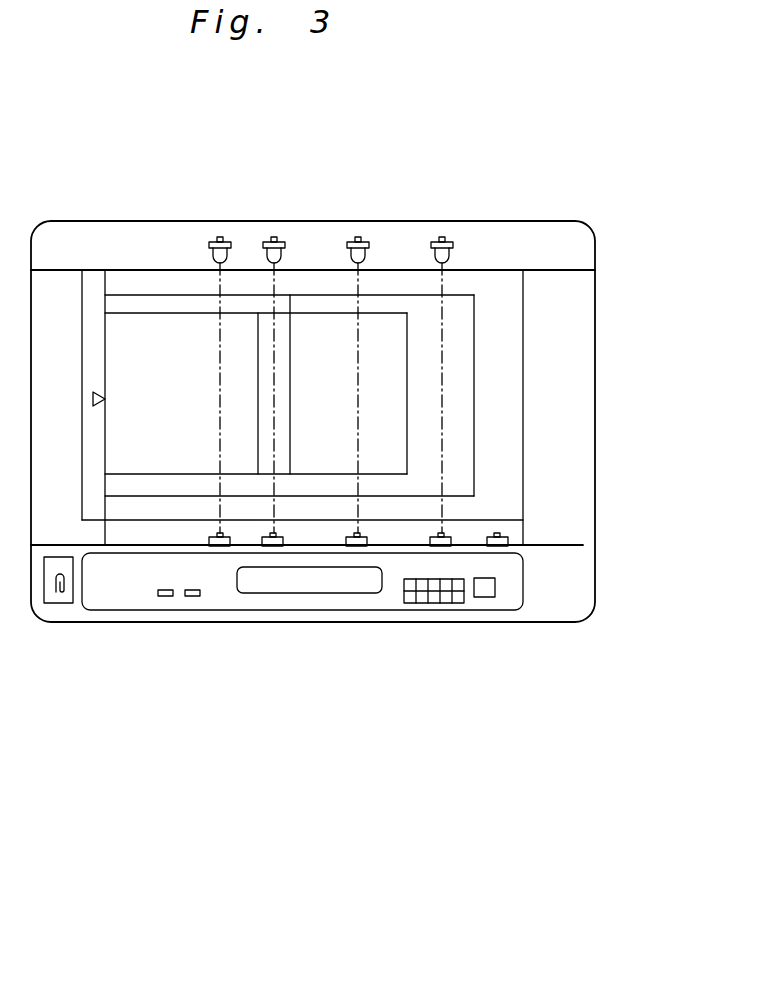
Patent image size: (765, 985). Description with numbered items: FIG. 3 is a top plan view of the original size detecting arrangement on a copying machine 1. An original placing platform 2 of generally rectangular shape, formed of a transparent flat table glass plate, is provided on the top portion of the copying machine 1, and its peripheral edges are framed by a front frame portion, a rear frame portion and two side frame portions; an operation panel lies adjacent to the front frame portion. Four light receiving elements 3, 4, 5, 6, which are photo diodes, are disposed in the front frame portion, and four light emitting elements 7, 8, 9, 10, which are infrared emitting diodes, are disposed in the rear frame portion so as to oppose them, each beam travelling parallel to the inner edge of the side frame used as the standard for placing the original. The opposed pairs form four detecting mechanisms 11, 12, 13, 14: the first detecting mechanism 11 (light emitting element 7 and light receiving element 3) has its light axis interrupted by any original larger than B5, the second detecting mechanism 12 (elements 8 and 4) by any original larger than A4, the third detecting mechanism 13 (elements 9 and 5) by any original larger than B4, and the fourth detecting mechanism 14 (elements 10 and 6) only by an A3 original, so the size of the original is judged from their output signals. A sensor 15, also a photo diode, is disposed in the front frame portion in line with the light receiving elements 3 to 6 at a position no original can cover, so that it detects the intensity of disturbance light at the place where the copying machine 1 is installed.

The copying machine 1 is at (567, 222).
The original placing platform 2 is at (511, 371).
The light receiving element 3 is at (212, 546).
The light receiving element 4 is at (273, 546).
The light receiving element 5 is at (355, 546).
The light receiving element 6 is at (433, 546).
The light emitting element 7 is at (210, 253).
The light emitting element 8 is at (266, 253).
The light emitting element 9 is at (350, 253).
The light emitting element 10 is at (436, 253).
The first detecting mechanism 11 is at (228, 242).
The second detecting mechanism 12 is at (280, 240).
The third detecting mechanism 13 is at (362, 240).
The fourth detecting mechanism 14 is at (448, 237).
The sensor 15 is at (503, 538).